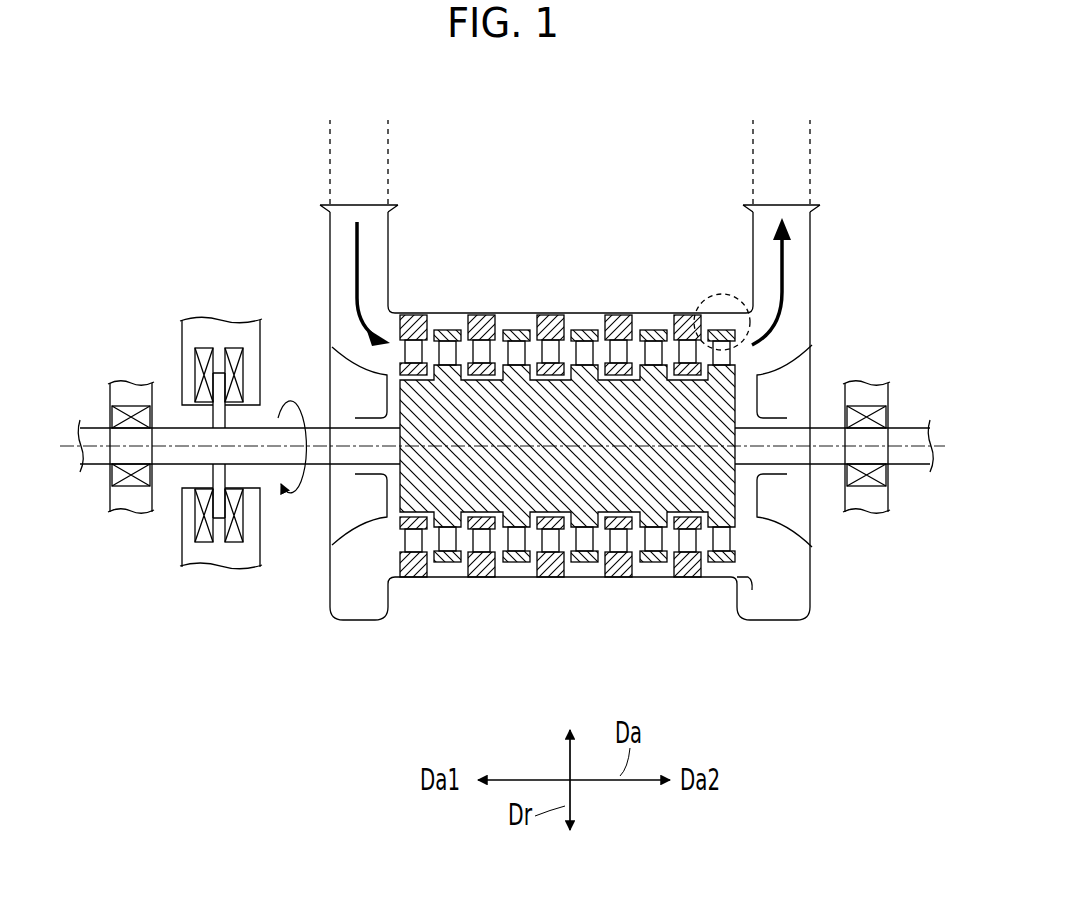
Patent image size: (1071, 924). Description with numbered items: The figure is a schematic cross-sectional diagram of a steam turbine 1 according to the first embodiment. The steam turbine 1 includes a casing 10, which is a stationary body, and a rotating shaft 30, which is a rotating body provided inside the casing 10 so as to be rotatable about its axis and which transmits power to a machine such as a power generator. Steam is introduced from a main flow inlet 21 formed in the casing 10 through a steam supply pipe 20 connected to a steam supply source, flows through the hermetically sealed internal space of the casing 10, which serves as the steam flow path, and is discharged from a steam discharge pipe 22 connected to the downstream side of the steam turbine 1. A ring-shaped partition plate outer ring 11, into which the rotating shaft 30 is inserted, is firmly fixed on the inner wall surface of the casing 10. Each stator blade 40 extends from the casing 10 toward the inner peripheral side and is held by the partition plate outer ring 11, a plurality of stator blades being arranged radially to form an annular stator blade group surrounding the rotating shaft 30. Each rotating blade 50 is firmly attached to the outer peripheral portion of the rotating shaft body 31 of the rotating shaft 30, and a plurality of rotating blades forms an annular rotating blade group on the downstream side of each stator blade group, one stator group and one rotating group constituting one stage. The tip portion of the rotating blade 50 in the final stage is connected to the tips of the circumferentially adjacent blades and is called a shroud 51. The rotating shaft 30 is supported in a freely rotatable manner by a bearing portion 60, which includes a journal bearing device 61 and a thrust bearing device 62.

The steam turbine 1 is at (832, 660).
The casing 10 is at (355, 622).
The partition plate outer ring 11 is at (680, 338).
The steam supply pipe 20 is at (388, 158).
The main flow inlet 21 is at (331, 238).
The steam discharge pipe 22 is at (810, 158).
The rotating shaft 30 is at (95, 428).
The rotating shaft body 31 is at (494, 492).
The stator blade 40 is at (411, 340).
The rotating blade 50 is at (512, 348).
The shroud 51 is at (716, 332).
The bearing portion 60 is at (165, 270).
The journal bearing device 61 is at (131, 514).
The thrust bearing device 62 is at (215, 572).